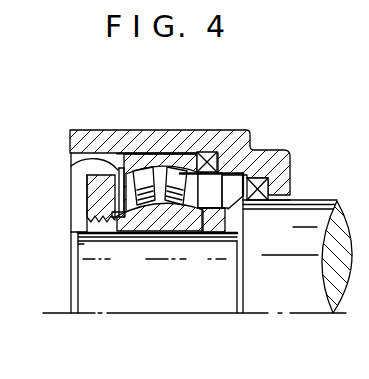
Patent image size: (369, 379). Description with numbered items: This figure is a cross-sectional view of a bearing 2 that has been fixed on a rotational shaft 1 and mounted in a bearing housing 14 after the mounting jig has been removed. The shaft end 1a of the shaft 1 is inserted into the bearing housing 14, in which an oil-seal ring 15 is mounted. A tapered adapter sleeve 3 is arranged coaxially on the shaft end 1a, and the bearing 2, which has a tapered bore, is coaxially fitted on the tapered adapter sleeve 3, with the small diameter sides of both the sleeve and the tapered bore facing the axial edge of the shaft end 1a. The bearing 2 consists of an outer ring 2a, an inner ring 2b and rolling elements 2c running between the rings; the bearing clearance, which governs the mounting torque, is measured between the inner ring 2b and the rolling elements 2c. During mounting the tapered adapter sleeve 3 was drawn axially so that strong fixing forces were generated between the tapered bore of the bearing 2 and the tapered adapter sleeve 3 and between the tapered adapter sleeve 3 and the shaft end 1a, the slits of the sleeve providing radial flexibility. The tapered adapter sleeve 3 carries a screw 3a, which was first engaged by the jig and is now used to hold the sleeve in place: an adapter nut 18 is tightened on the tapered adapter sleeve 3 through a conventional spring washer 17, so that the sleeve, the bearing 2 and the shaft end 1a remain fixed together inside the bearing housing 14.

The shaft 1 is at (315, 200).
The shaft end 1a is at (154, 313).
The bearing 2 is at (164, 146).
The outer ring 2a is at (143, 165).
The inner ring 2b is at (153, 224).
The rolling elements 2c is at (230, 211).
The tapered adapter sleeve 3 is at (181, 214).
The screw 3a is at (80, 240).
The bearing housing 14 is at (188, 131).
The oil-seal ring 15 is at (258, 182).
The spring washer 17 is at (71, 166).
The adapter nut 18 is at (88, 197).